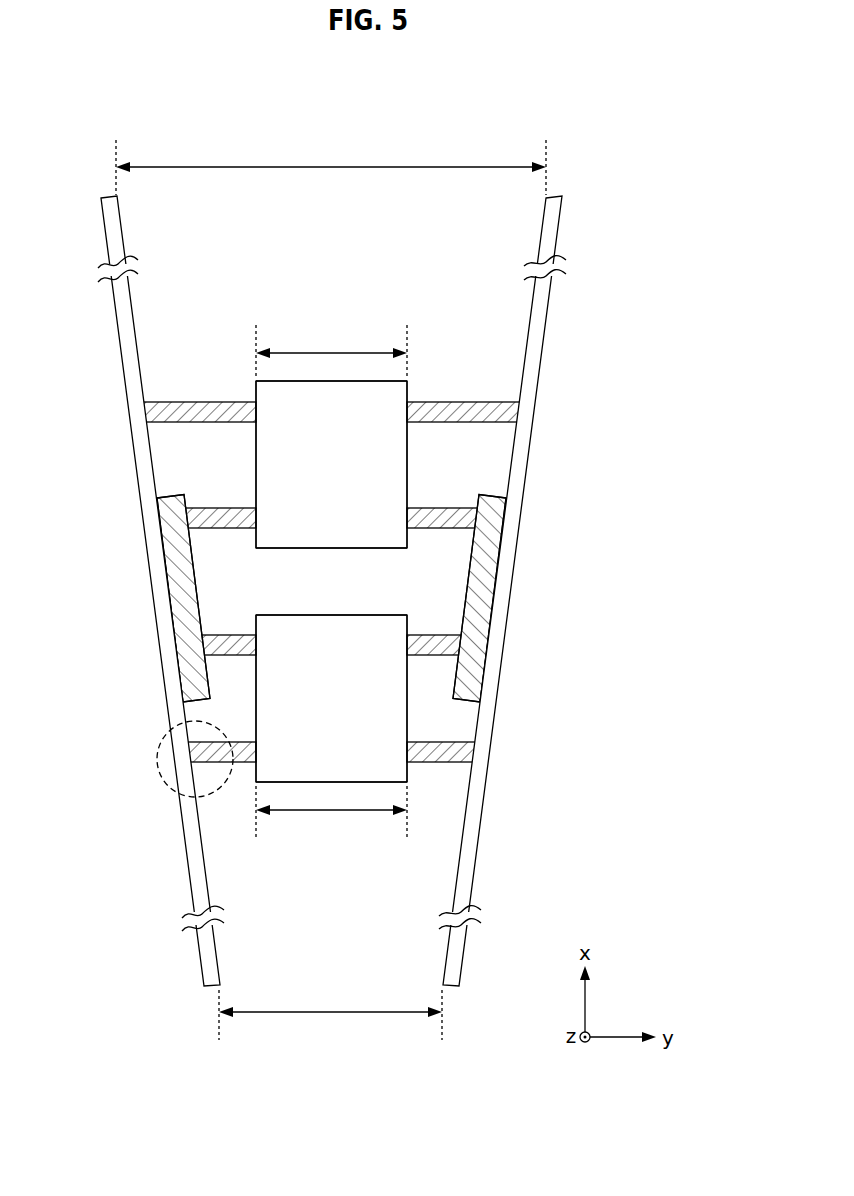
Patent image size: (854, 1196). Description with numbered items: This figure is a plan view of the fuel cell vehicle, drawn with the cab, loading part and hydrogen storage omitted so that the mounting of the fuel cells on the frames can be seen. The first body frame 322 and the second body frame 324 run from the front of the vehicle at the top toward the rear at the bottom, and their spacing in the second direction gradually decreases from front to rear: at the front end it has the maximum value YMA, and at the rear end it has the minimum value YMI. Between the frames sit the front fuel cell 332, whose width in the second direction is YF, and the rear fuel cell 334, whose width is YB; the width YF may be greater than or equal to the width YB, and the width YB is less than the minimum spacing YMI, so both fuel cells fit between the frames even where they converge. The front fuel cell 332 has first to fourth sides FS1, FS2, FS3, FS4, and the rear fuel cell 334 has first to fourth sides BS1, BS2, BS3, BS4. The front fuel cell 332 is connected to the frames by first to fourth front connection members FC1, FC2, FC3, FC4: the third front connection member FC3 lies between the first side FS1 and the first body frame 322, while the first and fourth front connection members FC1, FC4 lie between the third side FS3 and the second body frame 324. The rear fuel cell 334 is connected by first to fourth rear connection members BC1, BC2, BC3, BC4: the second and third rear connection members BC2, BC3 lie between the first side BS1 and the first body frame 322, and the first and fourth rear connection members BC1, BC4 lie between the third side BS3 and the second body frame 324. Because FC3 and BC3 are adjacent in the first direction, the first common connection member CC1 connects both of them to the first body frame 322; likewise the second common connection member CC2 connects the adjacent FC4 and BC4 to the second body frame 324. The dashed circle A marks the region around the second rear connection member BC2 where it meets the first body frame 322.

The first body frame 322 is at (192, 876).
The second body frame 324 is at (470, 876).
The front fuel cell 332 is at (390, 493).
The rear fuel cell 334 is at (388, 732).
The first front connection member FC1 is at (467, 404).
The second front connection member FC2 is at (195, 404).
The third front connection member FC3 is at (200, 514).
The fourth front connection member FC4 is at (465, 514).
The first common connection member CC1 is at (190, 592).
The second common connection member CC2 is at (480, 590).
The first rear connection member BC1 is at (432, 764).
The second rear connection member BC2 is at (205, 764).
The third rear connection member BC3 is at (237, 656).
The fourth rear connection member BC4 is at (426, 656).
The first side of the front fuel cell FS1 is at (256, 463).
The second side of the front fuel cell FS2 is at (331, 382).
The third side of the front fuel cell FS3 is at (407, 463).
The fourth side of the front fuel cell FS4 is at (331, 547).
The first side of the rear fuel cell BS1 is at (256, 699).
The second side of the rear fuel cell BS2 is at (331, 616).
The third side of the rear fuel cell BS3 is at (407, 699).
The fourth side of the rear fuel cell BS4 is at (331, 781).
The maximum spacing distance YMA is at (331, 167).
The minimum spacing distance YMI is at (330, 1017).
The width of the front fuel cell YF is at (331, 349).
The width of the rear fuel cell YB is at (331, 813).
The enlarged detail region A is at (158, 755).